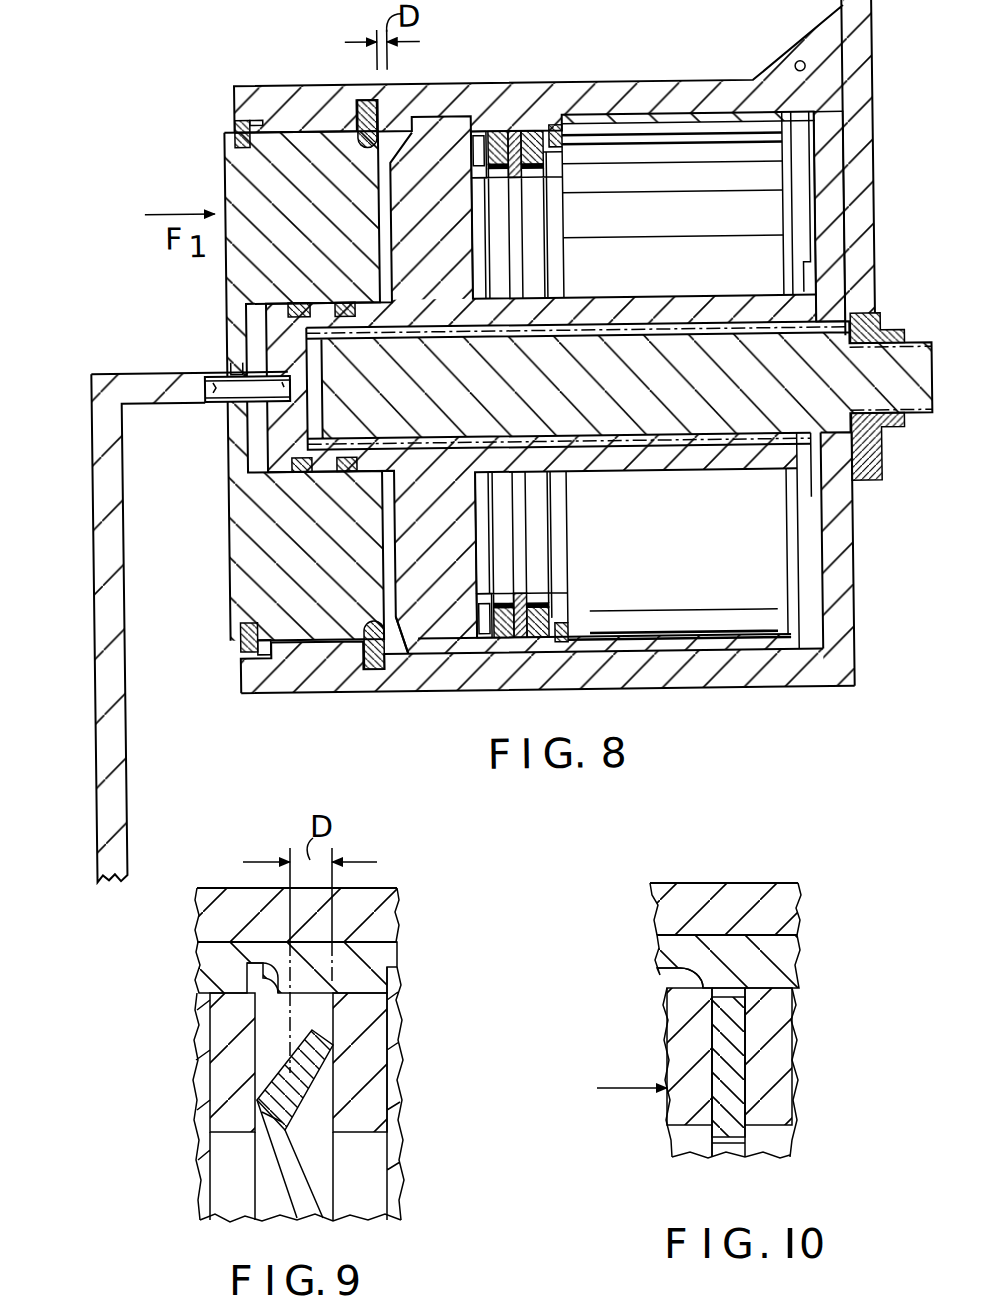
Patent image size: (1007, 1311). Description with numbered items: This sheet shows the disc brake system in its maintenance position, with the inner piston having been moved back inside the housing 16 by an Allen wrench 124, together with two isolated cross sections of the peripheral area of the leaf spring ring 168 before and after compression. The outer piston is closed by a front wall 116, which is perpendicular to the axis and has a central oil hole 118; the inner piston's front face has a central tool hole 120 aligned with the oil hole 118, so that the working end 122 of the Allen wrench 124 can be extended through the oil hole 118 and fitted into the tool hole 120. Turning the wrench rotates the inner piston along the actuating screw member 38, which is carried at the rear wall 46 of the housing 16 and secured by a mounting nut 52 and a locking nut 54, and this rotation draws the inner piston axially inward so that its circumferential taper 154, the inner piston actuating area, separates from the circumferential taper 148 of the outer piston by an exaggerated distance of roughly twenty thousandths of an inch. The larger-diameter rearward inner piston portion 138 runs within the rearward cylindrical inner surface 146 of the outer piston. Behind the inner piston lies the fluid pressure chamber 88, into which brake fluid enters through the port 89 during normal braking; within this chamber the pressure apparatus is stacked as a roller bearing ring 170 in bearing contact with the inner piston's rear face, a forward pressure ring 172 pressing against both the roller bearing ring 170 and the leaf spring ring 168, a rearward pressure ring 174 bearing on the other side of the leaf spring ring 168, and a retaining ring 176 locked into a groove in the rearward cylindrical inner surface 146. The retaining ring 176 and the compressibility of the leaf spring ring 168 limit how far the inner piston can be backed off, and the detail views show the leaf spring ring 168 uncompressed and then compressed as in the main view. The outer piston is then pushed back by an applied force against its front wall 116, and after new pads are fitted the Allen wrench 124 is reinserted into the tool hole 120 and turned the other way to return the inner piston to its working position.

In FIG. 8, the housing 16 is at (657, 61).
In FIG. 9, the housing 16 is at (213, 915).
In FIG. 10, the housing 16 is at (777, 910).
In FIG. 8, the actuating screw member 38 is at (750, 343).
In FIG. 8, the rear wall 46 is at (824, 206).
In FIG. 8, the mounting nut 52 is at (872, 441).
In FIG. 8, the locking nut 54 is at (891, 334).
In FIG. 8, the fluid pressure chamber 88 is at (683, 284).
In FIG. 8, the port 89 is at (806, 64).
In FIG. 8, the front wall 116 is at (238, 254).
In FIG. 8, the oil hole 118 is at (235, 354).
In FIG. 8, the tool hole 120 is at (268, 400).
In FIG. 8, the working end 122 is at (278, 382).
In FIG. 8, the Allen wrench 124 is at (79, 716).
In FIG. 9, the rearward inner piston portion 138 is at (387, 947).
In FIG. 10, the rearward inner piston portion 138 is at (768, 960).
In FIG. 9, the rearward cylindrical inner surface 146 is at (247, 968).
In FIG. 10, the rearward cylindrical inner surface 146 is at (665, 970).
In FIG. 8, the circumferential taper 148 is at (382, 650).
In FIG. 8, the circumferential taper 154 is at (413, 623).
In FIG. 8, the leaf spring ring 168 is at (520, 130).
In FIG. 9, the leaf spring ring 168 is at (316, 1053).
In FIG. 10, the leaf spring ring 168 is at (735, 1037).
In FIG. 8, the roller bearing ring 170 is at (479, 130).
In FIG. 9, the roller bearing ring 170 is at (223, 1077).
In FIG. 10, the roller bearing ring 170 is at (678, 1033).
In FIG. 8, the forward pressure ring 172 is at (500, 130).
In FIG. 8, the rearward pressure ring 174 is at (540, 130).
In FIG. 9, the rearward pressure ring 174 is at (370, 1097).
In FIG. 10, the rearward pressure ring 174 is at (772, 1062).
In FIG. 8, the retaining ring 176 is at (565, 150).